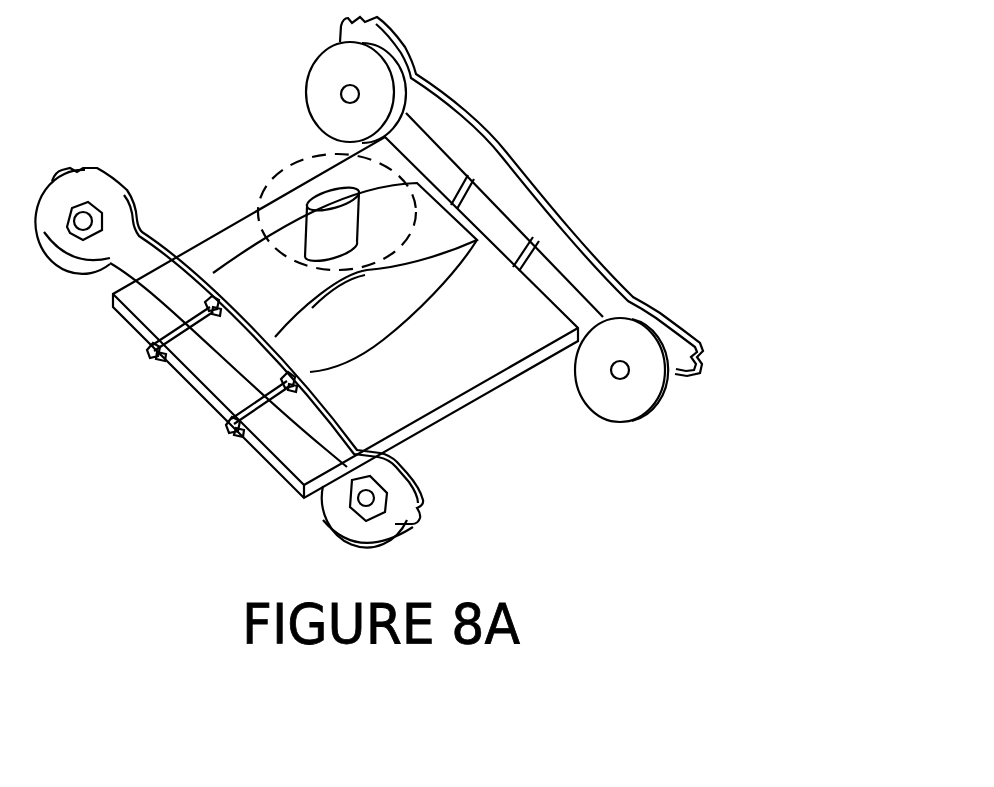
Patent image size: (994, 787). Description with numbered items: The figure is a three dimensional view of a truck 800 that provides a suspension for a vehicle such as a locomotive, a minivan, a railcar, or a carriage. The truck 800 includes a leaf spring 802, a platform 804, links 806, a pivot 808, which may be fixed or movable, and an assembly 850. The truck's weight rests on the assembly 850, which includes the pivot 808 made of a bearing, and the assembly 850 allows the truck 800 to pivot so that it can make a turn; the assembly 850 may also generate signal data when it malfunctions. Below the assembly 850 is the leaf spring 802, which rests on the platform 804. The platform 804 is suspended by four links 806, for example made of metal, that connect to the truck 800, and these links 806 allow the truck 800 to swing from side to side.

The truck 800 is at (605, 578).
The leaf spring 802 is at (244, 260).
The platform 804 is at (486, 303).
The link 806 is at (208, 439).
The pivot 808 is at (439, 535).
The assembly 850 is at (404, 193).